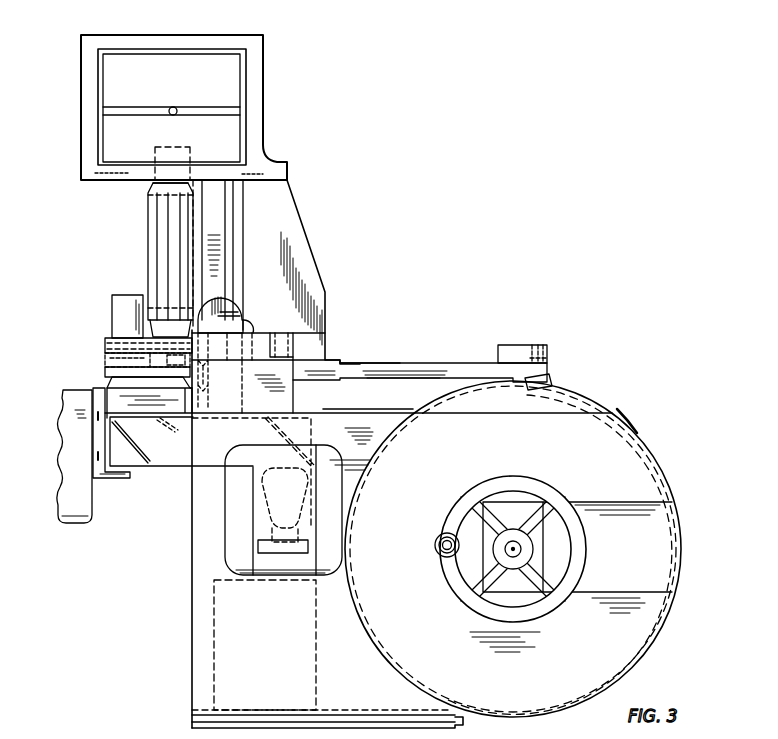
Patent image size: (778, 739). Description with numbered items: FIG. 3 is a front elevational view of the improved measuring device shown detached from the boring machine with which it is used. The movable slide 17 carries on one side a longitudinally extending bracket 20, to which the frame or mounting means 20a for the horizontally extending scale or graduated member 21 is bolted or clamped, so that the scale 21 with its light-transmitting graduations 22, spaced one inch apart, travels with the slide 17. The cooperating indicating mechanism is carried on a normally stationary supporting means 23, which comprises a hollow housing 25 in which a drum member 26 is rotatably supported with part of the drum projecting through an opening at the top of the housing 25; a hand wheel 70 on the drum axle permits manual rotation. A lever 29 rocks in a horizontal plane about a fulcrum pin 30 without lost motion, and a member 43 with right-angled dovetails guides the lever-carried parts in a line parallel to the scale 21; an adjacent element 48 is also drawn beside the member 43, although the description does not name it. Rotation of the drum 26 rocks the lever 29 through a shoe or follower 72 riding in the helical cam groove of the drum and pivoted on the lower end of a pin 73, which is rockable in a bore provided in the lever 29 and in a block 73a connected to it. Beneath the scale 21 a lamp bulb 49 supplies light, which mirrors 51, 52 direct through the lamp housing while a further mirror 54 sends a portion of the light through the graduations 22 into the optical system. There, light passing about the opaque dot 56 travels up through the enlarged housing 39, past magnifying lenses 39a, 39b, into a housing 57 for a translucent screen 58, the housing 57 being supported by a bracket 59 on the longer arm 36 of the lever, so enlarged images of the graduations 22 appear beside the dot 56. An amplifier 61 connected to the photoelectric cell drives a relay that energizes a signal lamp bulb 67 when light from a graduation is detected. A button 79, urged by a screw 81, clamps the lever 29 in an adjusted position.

The slide 17 is at (70, 405).
The bracket 20 is at (110, 478).
The frame or mounting means 20a is at (107, 386).
The scale or graduated member 21 is at (108, 368).
The graduations 22 is at (145, 107).
The supporting means 23 is at (188, 553).
The hollow housing 25 is at (622, 422).
The drum member 26 is at (590, 398).
The lever 29 is at (385, 355).
The fulcrum pin 30 is at (210, 376).
The longer arm 36 is at (452, 368).
The enlarged housing 39 is at (150, 225).
The lens 39a is at (152, 300).
The lens 39b is at (160, 194).
The member 43 is at (105, 345).
The block 48 is at (114, 318).
The lamp bulb 49 is at (267, 495).
The mirror 51 is at (264, 433).
The mirror 52 is at (150, 459).
The mirror 54 is at (156, 428).
The dot 56 is at (176, 108).
The housing 57 is at (264, 62).
The screen 58 is at (232, 78).
The bracket 59 is at (300, 246).
The amplifier 61 is at (216, 668).
The lamp bulb 67 is at (232, 312).
The hand wheel 70 is at (538, 608).
The shoe or follower 72 is at (552, 380).
The pin 73 is at (540, 346).
The block 73a is at (510, 348).
The button 79 is at (300, 341).
The screw 81 is at (293, 313).